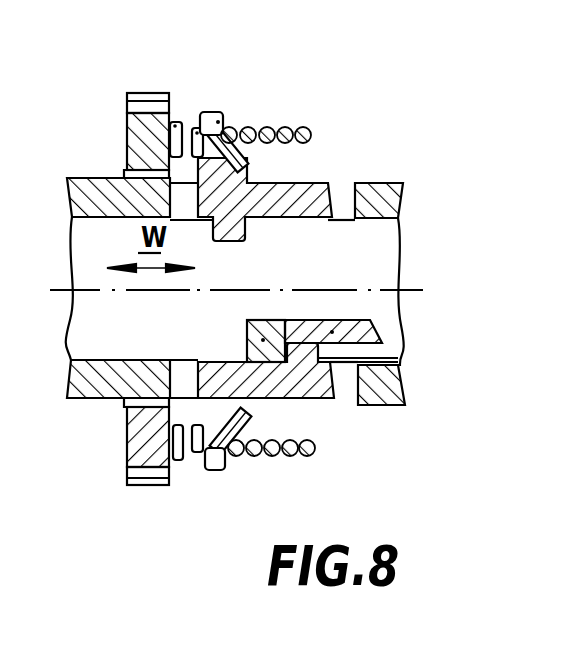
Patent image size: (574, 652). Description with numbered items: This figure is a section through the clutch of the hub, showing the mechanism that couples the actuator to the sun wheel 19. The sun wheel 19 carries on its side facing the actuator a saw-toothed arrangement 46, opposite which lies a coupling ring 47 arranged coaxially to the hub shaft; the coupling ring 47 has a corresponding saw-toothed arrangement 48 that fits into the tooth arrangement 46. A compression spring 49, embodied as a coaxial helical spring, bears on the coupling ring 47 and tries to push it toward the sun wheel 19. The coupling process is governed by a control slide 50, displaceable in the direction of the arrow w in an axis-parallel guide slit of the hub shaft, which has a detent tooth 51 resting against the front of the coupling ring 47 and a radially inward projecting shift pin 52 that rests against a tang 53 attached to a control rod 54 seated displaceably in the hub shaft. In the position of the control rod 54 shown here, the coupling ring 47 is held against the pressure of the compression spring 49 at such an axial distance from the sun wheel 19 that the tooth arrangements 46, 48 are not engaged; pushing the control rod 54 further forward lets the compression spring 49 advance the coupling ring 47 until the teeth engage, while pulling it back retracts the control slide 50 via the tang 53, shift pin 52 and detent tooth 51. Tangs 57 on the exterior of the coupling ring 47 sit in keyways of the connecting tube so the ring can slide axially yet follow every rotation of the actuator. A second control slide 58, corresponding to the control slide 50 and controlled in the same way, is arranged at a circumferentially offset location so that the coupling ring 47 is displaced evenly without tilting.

The sun wheel 19 is at (145, 135).
The saw-toothed arrangement 46 is at (175, 124).
The coupling ring 47 is at (221, 470).
The saw-toothed arrangement 48 is at (197, 128).
The compression spring 49 is at (310, 129).
The control slide 50 is at (338, 420).
The detent tooth 51 is at (187, 393).
The shift pin 52 is at (400, 360).
The tang 53 is at (263, 340).
The control rod 54 is at (333, 331).
The tangs 57 is at (222, 118).
The second control slide 58 is at (344, 173).